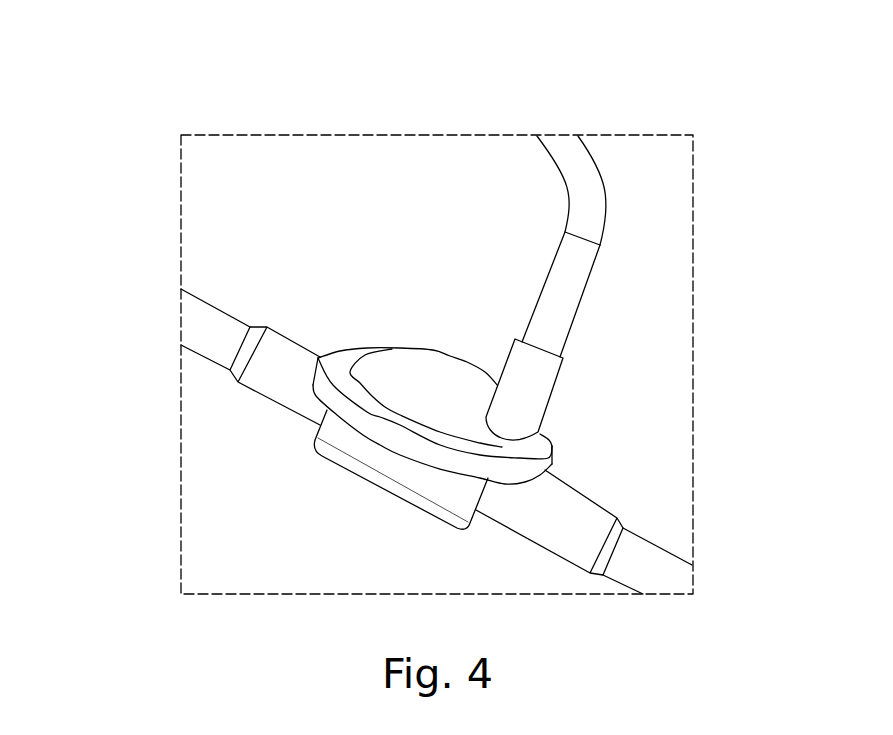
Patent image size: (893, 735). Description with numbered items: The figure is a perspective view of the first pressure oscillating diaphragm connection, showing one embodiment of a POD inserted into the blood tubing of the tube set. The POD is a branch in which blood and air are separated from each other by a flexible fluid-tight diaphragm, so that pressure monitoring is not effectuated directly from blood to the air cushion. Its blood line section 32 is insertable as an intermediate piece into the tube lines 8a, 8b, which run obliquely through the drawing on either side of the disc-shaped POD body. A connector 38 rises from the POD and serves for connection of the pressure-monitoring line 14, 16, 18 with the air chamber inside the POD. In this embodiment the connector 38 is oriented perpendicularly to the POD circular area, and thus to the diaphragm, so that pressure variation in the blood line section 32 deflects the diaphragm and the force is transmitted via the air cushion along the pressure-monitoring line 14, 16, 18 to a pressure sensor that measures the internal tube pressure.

The pressure oscillating diaphragm POD is at (158, 168).
The tube line 8a is at (478, 481).
The tube line 8b is at (655, 578).
The blood line section 32 is at (597, 512).
The connector 38 is at (513, 360).
The pressure-monitoring line 14 is at (602, 207).
The pressure-monitoring line 16 is at (602, 207).
The pressure-monitoring line 18 is at (568, 147).